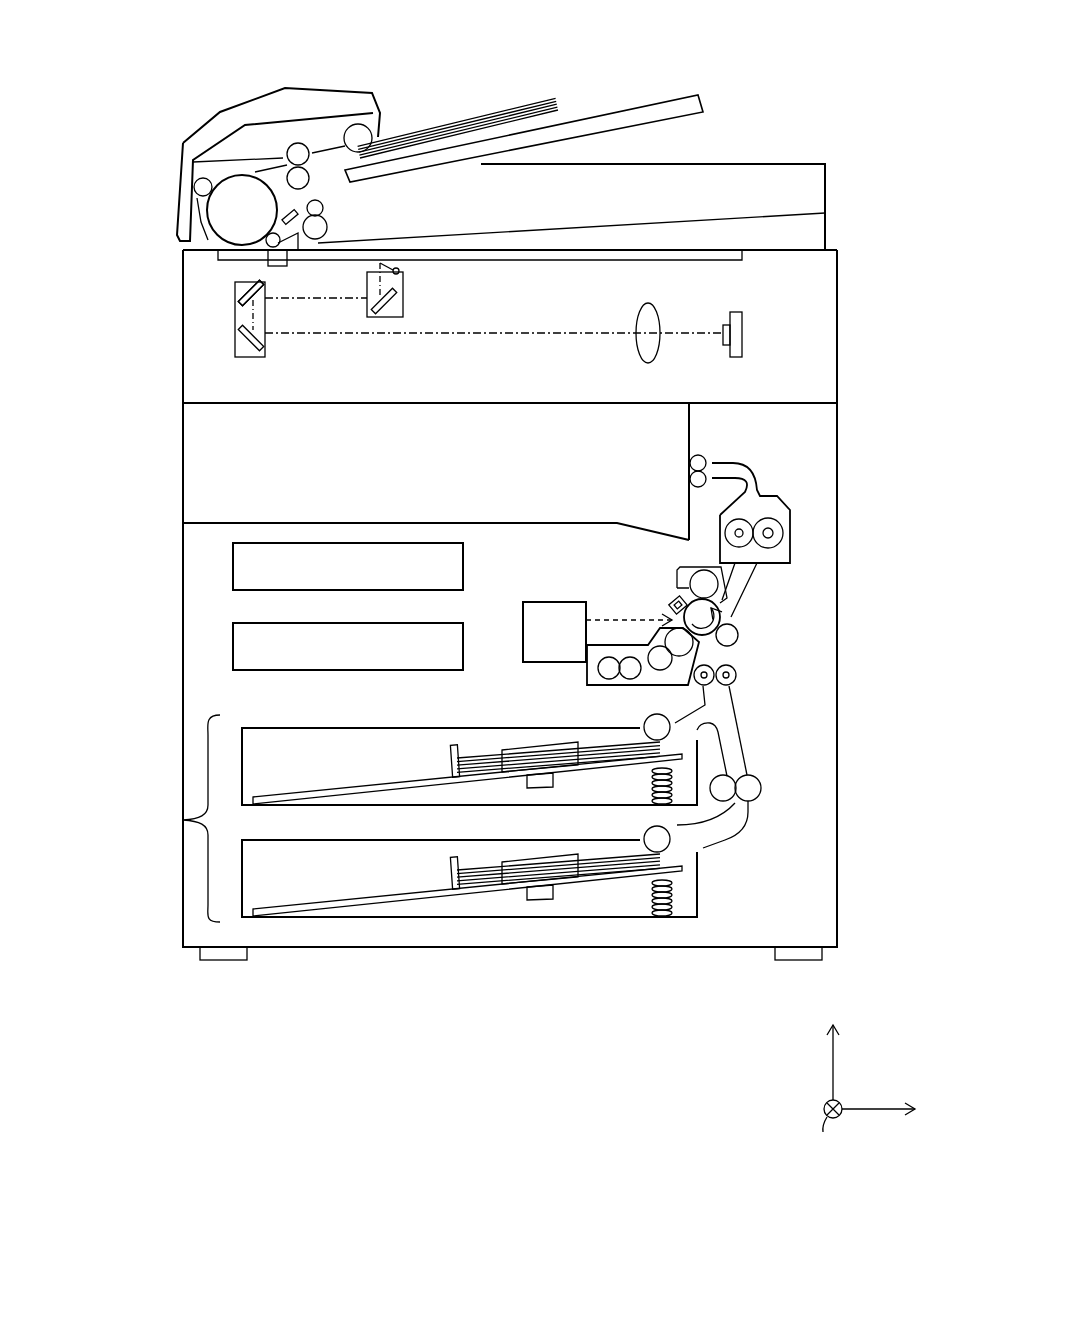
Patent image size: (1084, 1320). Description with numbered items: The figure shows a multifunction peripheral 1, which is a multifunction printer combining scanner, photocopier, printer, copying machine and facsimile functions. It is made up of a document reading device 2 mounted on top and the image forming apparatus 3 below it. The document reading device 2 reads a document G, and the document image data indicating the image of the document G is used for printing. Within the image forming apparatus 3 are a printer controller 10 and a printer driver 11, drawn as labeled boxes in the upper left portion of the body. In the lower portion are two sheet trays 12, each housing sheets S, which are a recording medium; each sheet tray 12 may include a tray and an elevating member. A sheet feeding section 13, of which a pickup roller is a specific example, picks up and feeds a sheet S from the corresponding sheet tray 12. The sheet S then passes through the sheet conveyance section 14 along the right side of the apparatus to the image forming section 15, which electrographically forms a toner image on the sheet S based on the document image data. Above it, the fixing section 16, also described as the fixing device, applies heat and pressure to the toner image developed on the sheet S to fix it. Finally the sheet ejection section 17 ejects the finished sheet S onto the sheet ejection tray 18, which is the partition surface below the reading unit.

The multifunction peripheral 1 is at (791, 86).
The document reading device 2 is at (156, 167).
The image forming apparatus 3 is at (117, 600).
The printer controller 10 is at (233, 552).
The printer driver 11 is at (233, 634).
The sheet tray 12 is at (422, 818).
The sheet feeding section 13 is at (673, 850).
The sheet conveyance section 14 is at (745, 848).
The image forming section 15 is at (760, 623).
The fixing section 16 is at (790, 550).
The sheet ejection section 17 is at (688, 470).
The sheet ejection tray 18 is at (428, 522).
The document G is at (478, 122).
The sheet S is at (460, 750).